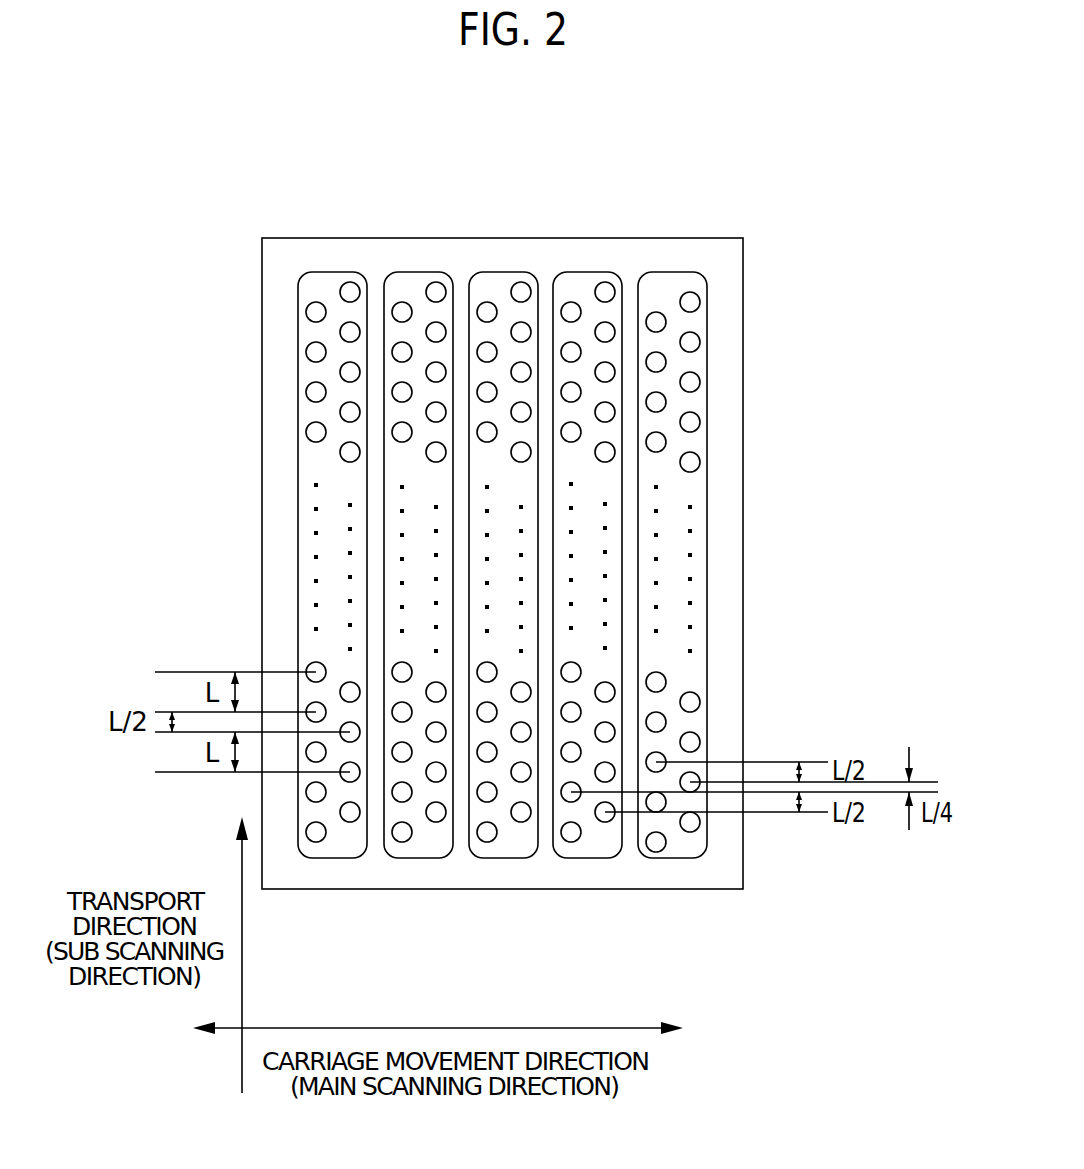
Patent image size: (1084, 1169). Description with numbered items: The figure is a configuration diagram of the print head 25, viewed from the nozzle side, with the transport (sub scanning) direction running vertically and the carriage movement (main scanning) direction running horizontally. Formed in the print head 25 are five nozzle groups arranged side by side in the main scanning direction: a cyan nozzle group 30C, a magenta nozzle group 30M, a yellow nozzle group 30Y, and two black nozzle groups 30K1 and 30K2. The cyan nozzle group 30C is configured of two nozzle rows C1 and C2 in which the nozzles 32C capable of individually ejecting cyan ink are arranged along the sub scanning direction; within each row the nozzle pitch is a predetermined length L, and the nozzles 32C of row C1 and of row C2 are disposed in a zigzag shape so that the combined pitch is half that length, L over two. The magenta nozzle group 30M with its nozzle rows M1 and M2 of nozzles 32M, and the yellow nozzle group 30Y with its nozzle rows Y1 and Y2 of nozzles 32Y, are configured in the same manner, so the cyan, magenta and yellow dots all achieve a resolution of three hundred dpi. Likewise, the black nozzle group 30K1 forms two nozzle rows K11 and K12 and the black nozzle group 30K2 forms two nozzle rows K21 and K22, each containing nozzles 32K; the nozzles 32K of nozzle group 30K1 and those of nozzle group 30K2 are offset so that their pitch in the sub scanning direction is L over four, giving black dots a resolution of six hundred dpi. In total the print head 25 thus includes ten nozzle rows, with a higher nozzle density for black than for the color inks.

The print head 25 is at (743, 563).
The cyan nozzle group 30C is at (328, 498).
The magenta nozzle group 30M is at (414, 498).
The yellow nozzle group 30Y is at (499, 498).
The first black nozzle group 30K1 is at (589, 498).
The second black nozzle group 30K2 is at (676, 498).
The nozzle row C1 is at (319, 277).
The nozzle row C2 is at (348, 504).
The nozzle row M1 is at (405, 277).
The nozzle row M2 is at (437, 504).
The nozzle row Y1 is at (490, 277).
The nozzle row Y2 is at (523, 504).
The nozzle row K11 is at (574, 277).
The nozzle row K12 is at (614, 504).
The nozzle row K21 is at (660, 279).
The nozzle row K22 is at (701, 509).
The nozzles 32C is at (340, 452).
The nozzles 32M is at (425, 410).
The nozzles 32Y is at (510, 370).
The nozzles 32K is at (580, 385).